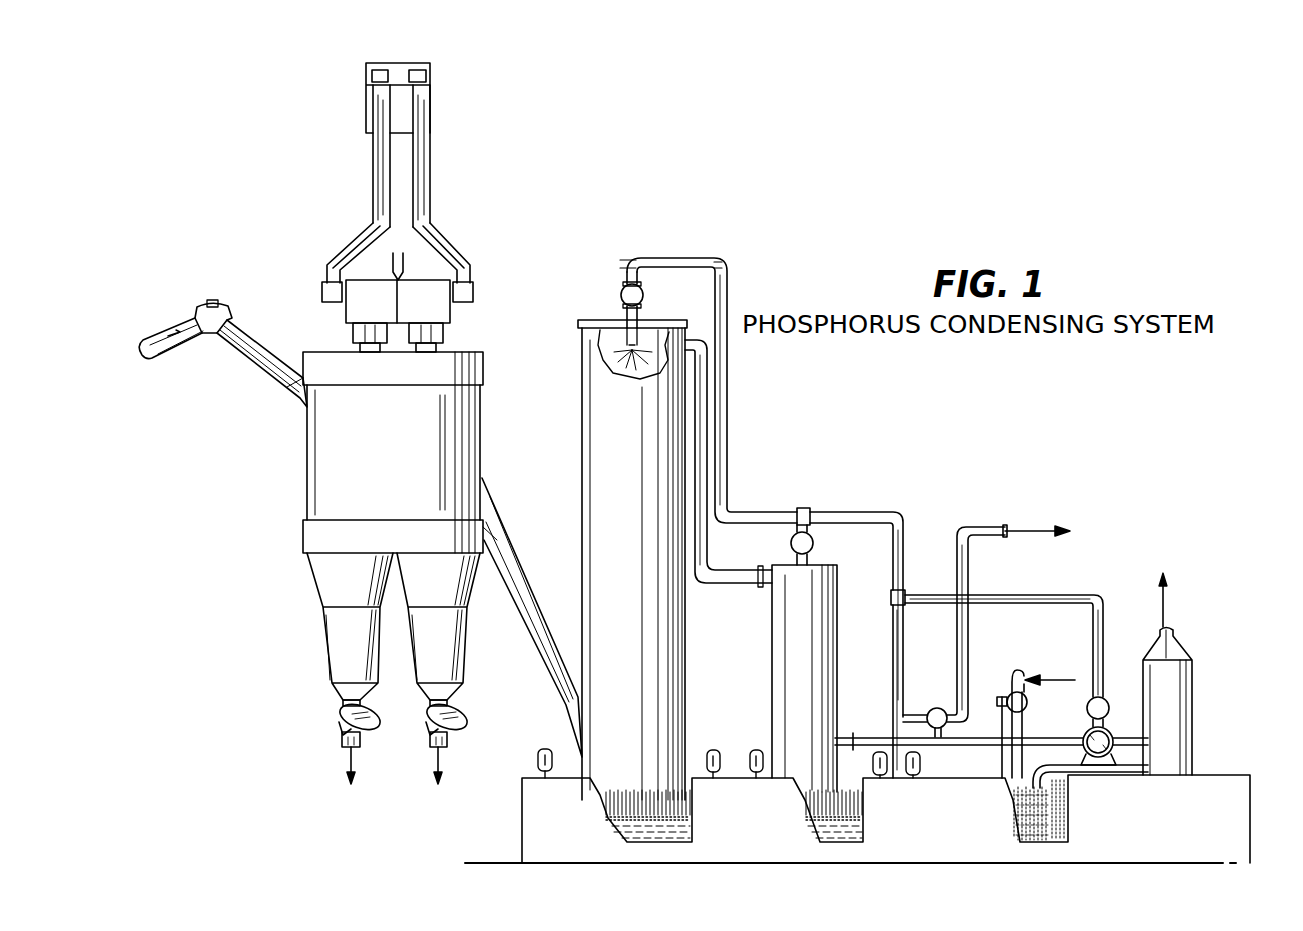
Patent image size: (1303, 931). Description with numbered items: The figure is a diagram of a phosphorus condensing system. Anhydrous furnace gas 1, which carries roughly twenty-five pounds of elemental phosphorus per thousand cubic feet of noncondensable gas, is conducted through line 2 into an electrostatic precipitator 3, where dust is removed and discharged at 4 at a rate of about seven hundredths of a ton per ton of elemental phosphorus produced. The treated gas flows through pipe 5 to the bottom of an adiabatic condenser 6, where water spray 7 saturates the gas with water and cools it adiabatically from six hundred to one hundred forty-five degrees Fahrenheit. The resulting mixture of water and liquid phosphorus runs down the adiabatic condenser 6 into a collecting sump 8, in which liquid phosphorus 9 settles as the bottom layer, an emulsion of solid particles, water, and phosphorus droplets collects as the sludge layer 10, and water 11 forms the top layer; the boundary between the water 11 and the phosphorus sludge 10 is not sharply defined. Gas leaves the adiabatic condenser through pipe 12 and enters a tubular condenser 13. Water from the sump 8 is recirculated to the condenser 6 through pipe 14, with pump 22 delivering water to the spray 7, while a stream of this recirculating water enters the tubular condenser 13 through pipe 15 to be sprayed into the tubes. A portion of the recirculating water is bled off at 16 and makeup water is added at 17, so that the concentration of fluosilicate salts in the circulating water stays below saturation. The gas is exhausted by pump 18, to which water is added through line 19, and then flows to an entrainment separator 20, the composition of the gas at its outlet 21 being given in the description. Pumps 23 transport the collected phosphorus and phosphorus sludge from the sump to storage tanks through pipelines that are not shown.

The furnace gas 1 is at (158, 337).
The line 2 is at (250, 332).
The electrostatic precipitator 3 is at (320, 447).
The dust discharge 4 is at (349, 760).
The pipe 5 is at (537, 645).
The adiabatic condenser 6 is at (600, 473).
The water spray 7 is at (633, 325).
The collecting sump 8 is at (527, 820).
The liquid phosphorus 9 is at (692, 832).
The phosphorus sludge layer 10 is at (692, 812).
The water 11 is at (692, 798).
The pipe 12 is at (708, 543).
The tubular condenser 13 is at (785, 648).
The pipe 14 is at (727, 403).
The pipe 15 is at (812, 554).
The bleed-off 16 is at (1028, 527).
The makeup water inlet 17 is at (1047, 678).
The pump 18 is at (1088, 732).
The line 19 is at (1023, 595).
The entrainment separator 20 is at (1193, 708).
The gas outlet 21 is at (1167, 612).
The pump 22 is at (920, 766).
The pumps 23 is at (539, 757).